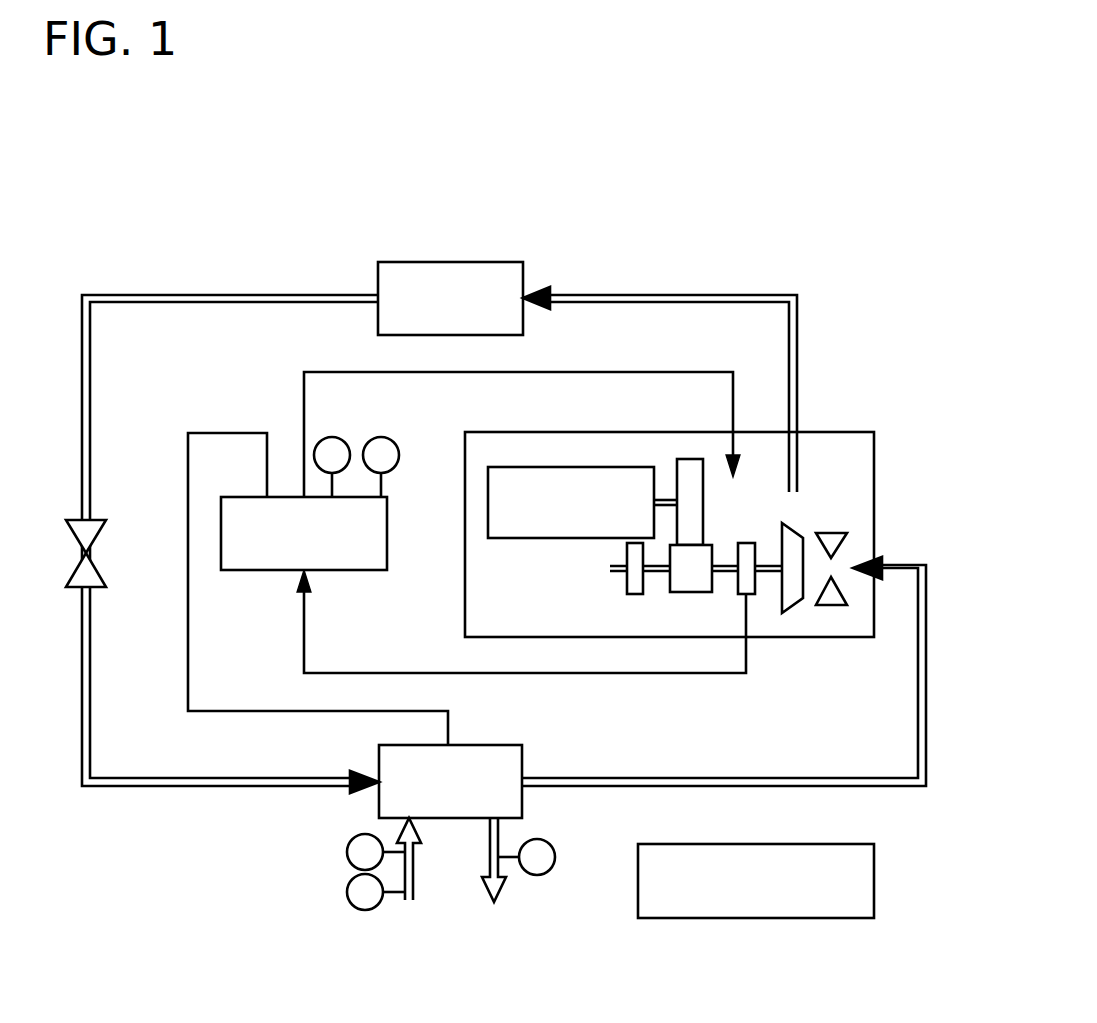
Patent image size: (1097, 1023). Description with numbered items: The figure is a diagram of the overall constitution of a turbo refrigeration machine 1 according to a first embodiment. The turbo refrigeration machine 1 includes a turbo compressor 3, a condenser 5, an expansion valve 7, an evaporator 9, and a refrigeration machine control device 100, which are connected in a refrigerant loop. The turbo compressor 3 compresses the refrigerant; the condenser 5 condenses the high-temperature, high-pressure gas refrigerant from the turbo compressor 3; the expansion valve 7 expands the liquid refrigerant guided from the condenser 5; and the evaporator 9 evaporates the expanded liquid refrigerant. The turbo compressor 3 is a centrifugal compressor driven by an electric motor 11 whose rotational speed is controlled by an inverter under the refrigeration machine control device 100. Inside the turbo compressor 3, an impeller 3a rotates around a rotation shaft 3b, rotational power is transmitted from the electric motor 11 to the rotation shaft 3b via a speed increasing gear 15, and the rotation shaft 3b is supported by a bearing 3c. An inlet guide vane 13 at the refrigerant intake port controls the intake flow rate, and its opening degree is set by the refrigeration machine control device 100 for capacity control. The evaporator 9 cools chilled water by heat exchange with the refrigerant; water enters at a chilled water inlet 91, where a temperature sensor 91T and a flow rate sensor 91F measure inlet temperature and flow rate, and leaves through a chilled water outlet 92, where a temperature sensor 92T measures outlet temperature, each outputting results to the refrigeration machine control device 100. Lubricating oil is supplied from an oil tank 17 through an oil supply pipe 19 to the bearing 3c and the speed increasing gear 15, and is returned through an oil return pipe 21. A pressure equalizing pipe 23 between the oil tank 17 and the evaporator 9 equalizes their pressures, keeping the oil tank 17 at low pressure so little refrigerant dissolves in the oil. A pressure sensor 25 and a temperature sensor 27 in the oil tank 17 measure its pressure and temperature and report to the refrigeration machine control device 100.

The turbo refrigeration machine 1 is at (703, 172).
The turbo compressor 3 is at (838, 421).
The impeller 3a is at (789, 613).
The rotation shaft 3b is at (765, 565).
The bearing 3c is at (633, 596).
The condenser 5 is at (449, 262).
The expansion valve 7 is at (95, 520).
The evaporator 9 is at (478, 745).
The electric motor 11 is at (523, 540).
The inlet guide vane 13 is at (838, 606).
The speed increasing gear 15 is at (692, 459).
The oil tank 17 is at (343, 571).
The oil supply pipe 19 is at (636, 372).
The oil return pipe 21 is at (413, 673).
The pressure equalizing pipe 23 is at (244, 711).
The pressure sensor 25 is at (332, 437).
The temperature sensor 27 is at (381, 437).
The chilled water inlet 91 is at (400, 902).
The temperature sensor 91T is at (347, 852).
The flow rate sensor 91F is at (347, 892).
The chilled water outlet 92 is at (508, 870).
The temperature sensor 92T is at (555, 857).
The refrigeration machine control device 100 is at (874, 876).